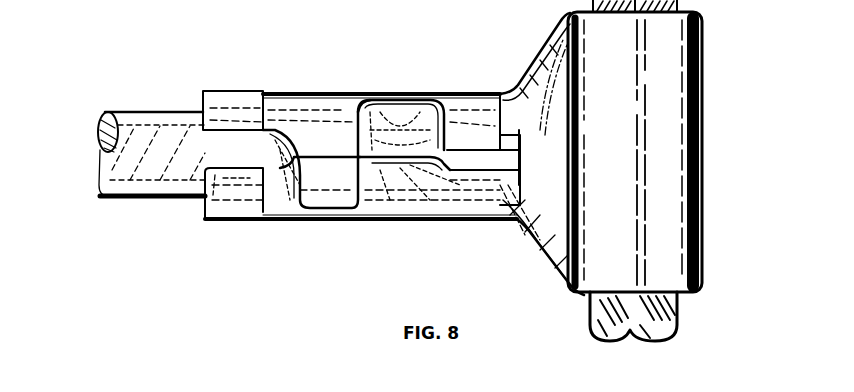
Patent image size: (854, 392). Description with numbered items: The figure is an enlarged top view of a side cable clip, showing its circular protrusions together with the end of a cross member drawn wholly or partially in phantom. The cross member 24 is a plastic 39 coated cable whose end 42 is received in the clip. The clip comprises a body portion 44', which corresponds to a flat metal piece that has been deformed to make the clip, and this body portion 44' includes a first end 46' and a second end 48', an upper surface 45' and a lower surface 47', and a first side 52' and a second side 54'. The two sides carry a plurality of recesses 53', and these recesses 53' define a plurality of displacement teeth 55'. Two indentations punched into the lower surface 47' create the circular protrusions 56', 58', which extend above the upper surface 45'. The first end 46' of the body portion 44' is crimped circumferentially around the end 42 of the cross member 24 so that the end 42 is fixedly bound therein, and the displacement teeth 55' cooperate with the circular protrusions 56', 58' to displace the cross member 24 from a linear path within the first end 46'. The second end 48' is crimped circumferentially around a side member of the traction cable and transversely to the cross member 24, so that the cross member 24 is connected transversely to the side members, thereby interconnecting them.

The cross member 24 is at (130, 145).
The first end 46' is at (220, 67).
The circular protrusion 56' is at (305, 112).
The first side 52' is at (381, 90).
The circular protrusion 58' is at (401, 89).
The upper surface 45' is at (511, 74).
The second end 48' is at (672, 170).
The lower surface 47' is at (709, 152).
The plastic 39 is at (514, 145).
The end 42 is at (516, 170).
The displacement teeth 55' is at (203, 219).
The second side 54' is at (362, 203).
The recesses 53' is at (380, 214).
The body portion 44' is at (519, 240).